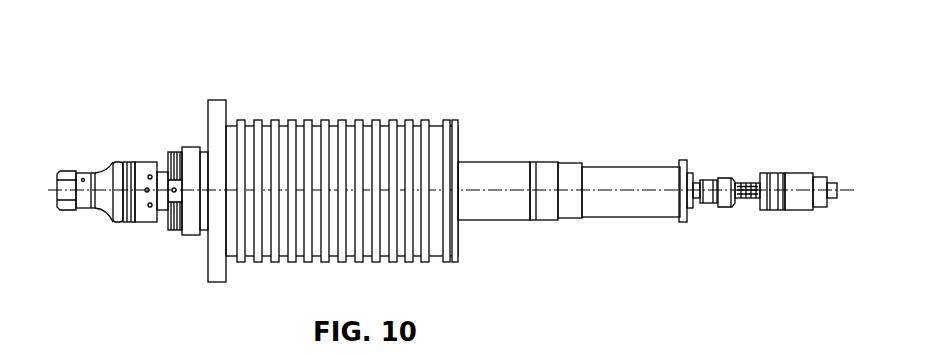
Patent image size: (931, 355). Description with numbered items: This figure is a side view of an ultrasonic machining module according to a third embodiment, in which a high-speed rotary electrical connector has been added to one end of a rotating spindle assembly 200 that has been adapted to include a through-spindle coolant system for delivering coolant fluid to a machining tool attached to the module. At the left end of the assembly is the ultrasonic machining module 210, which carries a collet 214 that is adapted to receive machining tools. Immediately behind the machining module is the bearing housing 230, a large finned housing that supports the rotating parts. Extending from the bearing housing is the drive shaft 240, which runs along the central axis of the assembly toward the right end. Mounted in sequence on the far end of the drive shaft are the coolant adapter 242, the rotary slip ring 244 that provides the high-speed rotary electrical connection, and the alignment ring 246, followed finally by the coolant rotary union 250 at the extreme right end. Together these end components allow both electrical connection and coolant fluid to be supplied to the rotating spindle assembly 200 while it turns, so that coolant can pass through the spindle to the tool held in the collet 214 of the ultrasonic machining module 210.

The rotating spindle assembly 200 is at (513, 64).
The ultrasonic machining module 210 is at (145, 232).
The collet 214 is at (66, 170).
The bearing housing 230 is at (340, 118).
The drive shaft 240 is at (627, 220).
The coolant adapter 242 is at (708, 178).
The rotary slip ring 244 is at (732, 208).
The alignment ring 246 is at (746, 181).
The coolant rotary union 250 is at (802, 211).